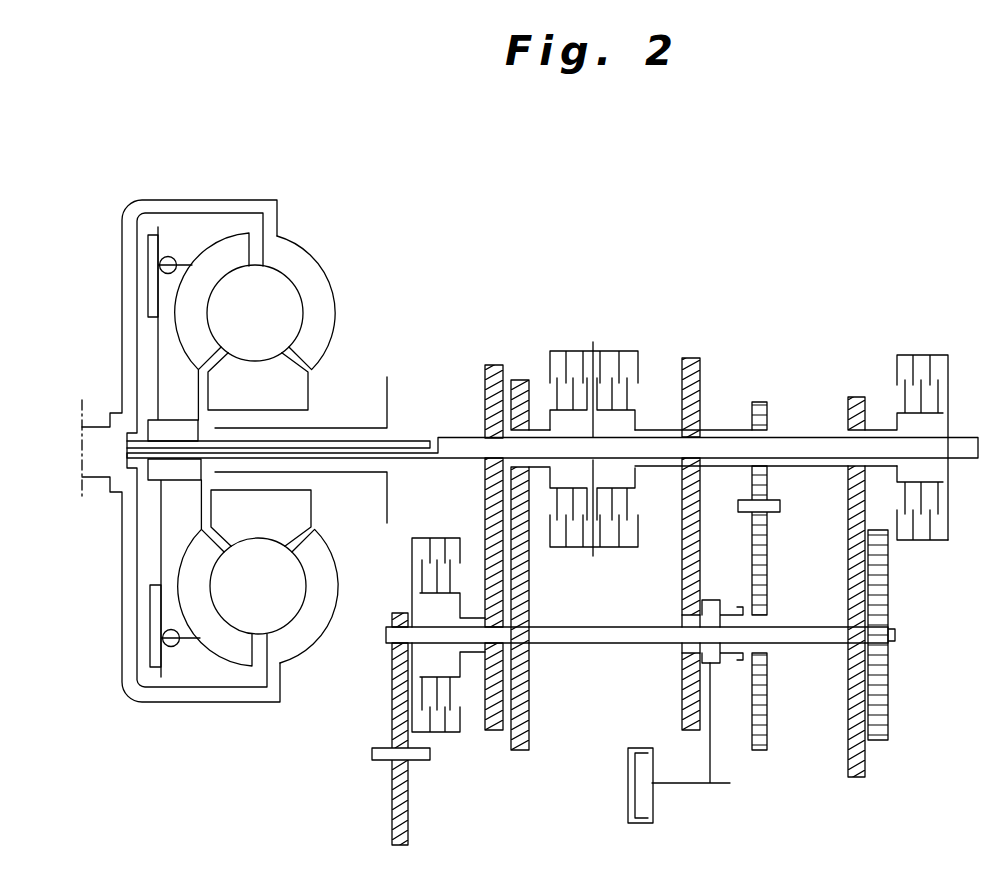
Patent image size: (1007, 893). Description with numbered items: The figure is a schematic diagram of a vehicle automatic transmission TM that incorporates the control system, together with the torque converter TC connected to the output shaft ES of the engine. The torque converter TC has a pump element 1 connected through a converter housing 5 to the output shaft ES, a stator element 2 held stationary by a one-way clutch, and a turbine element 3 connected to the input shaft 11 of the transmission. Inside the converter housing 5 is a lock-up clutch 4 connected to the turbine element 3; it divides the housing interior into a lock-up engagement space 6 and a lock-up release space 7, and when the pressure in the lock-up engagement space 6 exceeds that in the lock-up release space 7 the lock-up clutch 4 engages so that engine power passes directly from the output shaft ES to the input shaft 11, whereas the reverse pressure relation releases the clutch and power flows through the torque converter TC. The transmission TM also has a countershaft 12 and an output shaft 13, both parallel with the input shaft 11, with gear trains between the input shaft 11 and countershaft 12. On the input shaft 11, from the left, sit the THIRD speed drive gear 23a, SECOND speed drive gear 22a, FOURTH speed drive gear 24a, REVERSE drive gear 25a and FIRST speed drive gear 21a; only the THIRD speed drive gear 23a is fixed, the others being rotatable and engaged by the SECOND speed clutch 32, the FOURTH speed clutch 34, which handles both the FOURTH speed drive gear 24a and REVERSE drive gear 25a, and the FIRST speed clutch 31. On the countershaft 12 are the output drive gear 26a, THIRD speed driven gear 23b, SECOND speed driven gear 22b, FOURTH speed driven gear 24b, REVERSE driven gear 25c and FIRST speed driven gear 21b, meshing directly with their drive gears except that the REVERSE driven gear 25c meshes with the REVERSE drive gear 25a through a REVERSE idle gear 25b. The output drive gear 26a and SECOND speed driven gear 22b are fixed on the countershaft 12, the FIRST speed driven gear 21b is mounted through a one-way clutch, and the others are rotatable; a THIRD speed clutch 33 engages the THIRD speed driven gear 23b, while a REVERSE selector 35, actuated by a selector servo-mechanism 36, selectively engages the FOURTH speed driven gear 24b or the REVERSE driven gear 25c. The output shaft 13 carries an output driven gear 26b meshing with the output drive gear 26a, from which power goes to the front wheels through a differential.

The torque converter TC is at (290, 204).
The automatic transmission TM is at (822, 256).
The output shaft of the engine ES is at (104, 476).
The pump element 1 is at (326, 275).
The stator element 2 is at (268, 366).
The turbine element 3 is at (208, 288).
The lock-up clutch 4 is at (148, 260).
The converter housing 5 is at (178, 200).
The lock-up engagement space 6 is at (198, 670).
The lock-up release space 7 is at (147, 547).
The input shaft 11 is at (810, 436).
The countershaft 12 is at (567, 643).
The output shaft 13 is at (430, 760).
The FIRST speed drive gear 21a is at (858, 396).
The FIRST speed driven gear 21b is at (858, 778).
The SECOND speed drive gear 22a is at (520, 378).
The SECOND speed driven gear 22b is at (522, 750).
The THIRD speed drive gear 23a is at (495, 363).
The THIRD speed driven gear 23b is at (493, 733).
The FOURTH speed drive gear 24a is at (690, 358).
The FOURTH speed driven gear 24b is at (682, 705).
The REVERSE drive gear 25a is at (762, 400).
The REVERSE idle gear 25b is at (775, 512).
The REVERSE driven gear 25c is at (765, 722).
The output drive gear 26a is at (400, 612).
The output driven gear 26b is at (393, 838).
The FIRST speed clutch 31 is at (925, 352).
The SECOND speed clutch 32 is at (575, 548).
The THIRD speed clutch 33 is at (436, 538).
The FOURTH speed clutch 34 is at (600, 350).
The REVERSE selector 35 is at (712, 600).
The selector servo-mechanism 36 is at (653, 800).